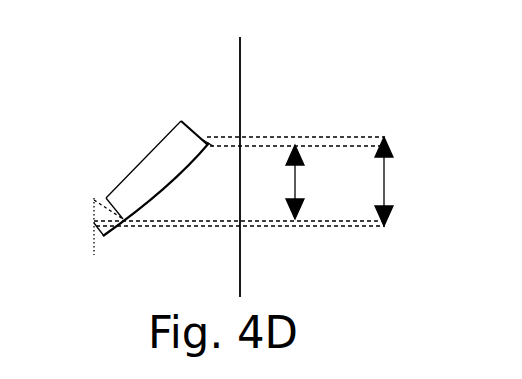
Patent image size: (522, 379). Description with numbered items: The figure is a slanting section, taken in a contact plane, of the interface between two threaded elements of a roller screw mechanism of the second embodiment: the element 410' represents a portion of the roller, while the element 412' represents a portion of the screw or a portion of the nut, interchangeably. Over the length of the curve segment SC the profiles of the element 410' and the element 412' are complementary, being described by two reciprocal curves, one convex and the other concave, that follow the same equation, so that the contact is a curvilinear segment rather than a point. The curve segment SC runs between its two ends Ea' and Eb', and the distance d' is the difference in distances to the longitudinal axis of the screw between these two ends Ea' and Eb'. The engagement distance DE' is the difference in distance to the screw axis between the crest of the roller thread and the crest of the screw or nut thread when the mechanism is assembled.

The roller portion 410' is at (299, 151).
The screw or nut portion 412' is at (210, 155).
The curve segment of contact SC is at (141, 163).
The first end of the curve segment Ea' is at (189, 99).
The second end of the curve segment Eb' is at (80, 206).
The distance d' is at (305, 182).
The engagement distance DE' is at (404, 181).